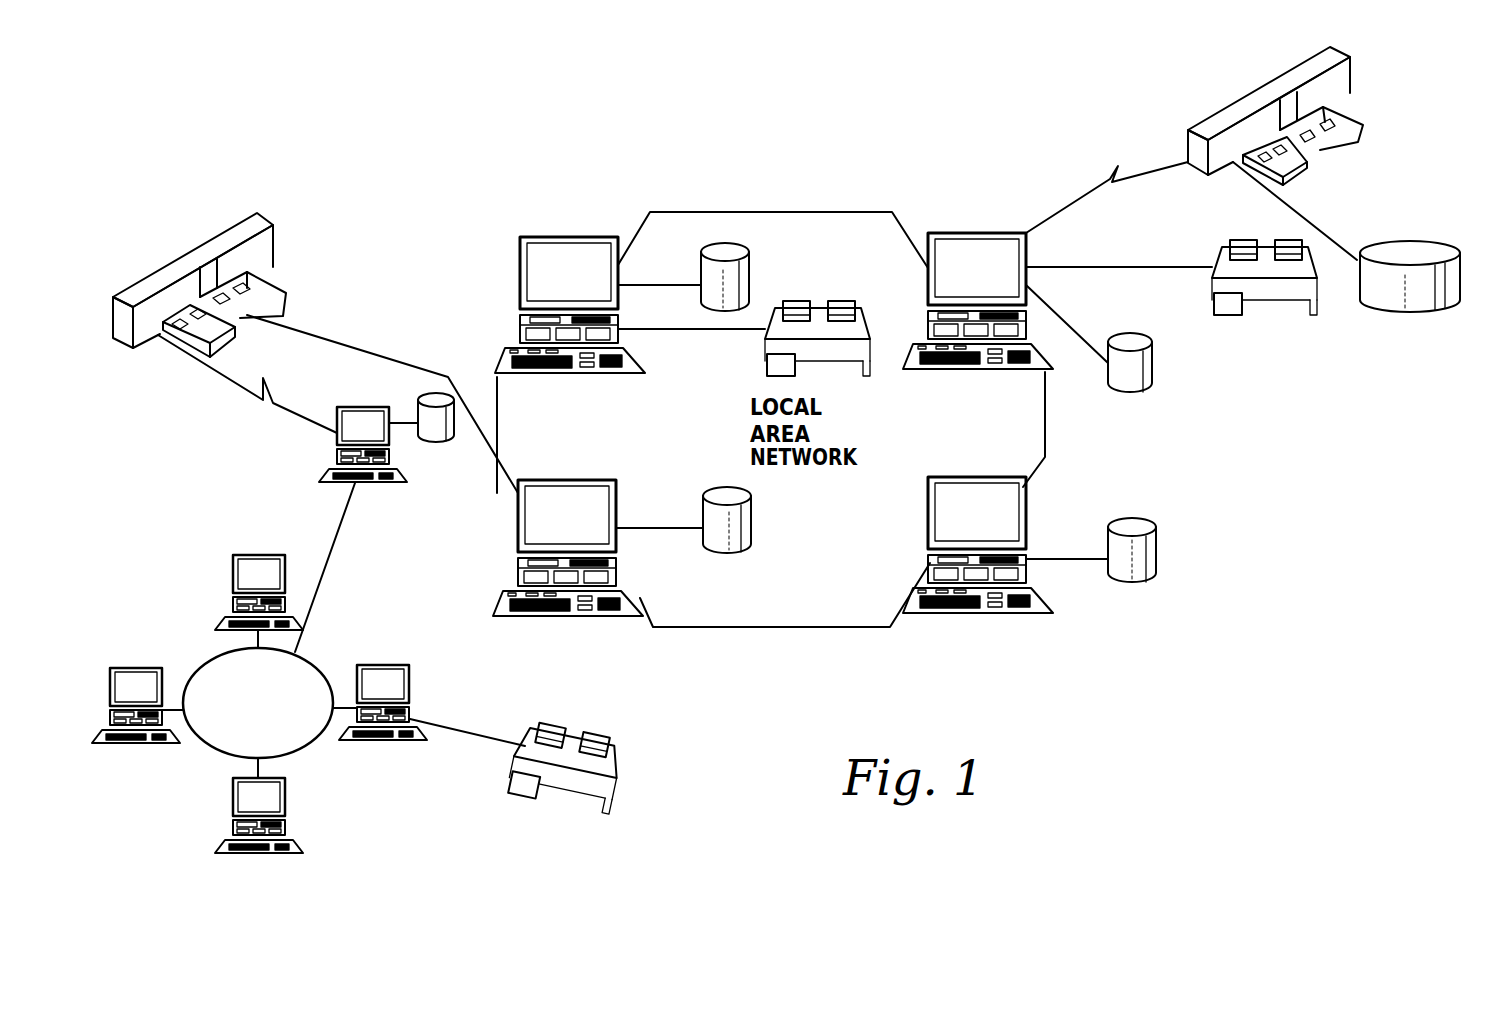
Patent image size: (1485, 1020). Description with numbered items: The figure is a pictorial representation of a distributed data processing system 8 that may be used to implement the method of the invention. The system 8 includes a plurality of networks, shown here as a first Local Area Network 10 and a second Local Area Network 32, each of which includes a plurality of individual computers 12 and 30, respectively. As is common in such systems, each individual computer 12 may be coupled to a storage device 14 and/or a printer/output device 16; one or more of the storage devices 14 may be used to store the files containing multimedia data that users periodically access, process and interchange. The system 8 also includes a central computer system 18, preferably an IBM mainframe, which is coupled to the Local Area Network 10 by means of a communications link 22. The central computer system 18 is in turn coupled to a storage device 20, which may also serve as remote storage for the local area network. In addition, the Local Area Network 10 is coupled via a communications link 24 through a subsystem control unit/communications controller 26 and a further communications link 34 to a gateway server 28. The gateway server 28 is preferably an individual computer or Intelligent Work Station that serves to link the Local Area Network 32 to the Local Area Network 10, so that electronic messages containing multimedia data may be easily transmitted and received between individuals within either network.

The distributed data processing system 8 is at (804, 173).
The Local Area Network (LAN) 10 is at (803, 628).
The individual computer 12 is at (590, 237).
The storage device 14 is at (751, 266).
The printer/output device 16 is at (819, 298).
The central computer system 18 is at (1266, 86).
The storage device 20 is at (1437, 242).
The communications link 22 is at (1146, 158).
The communications link 24 is at (366, 353).
The subsystem control unit/communications controller 26 is at (260, 223).
The gateway server 28 is at (366, 407).
The individual computer 30 is at (265, 555).
The Local Area Network (LAN) 32 is at (212, 747).
The communications link 34 is at (272, 403).